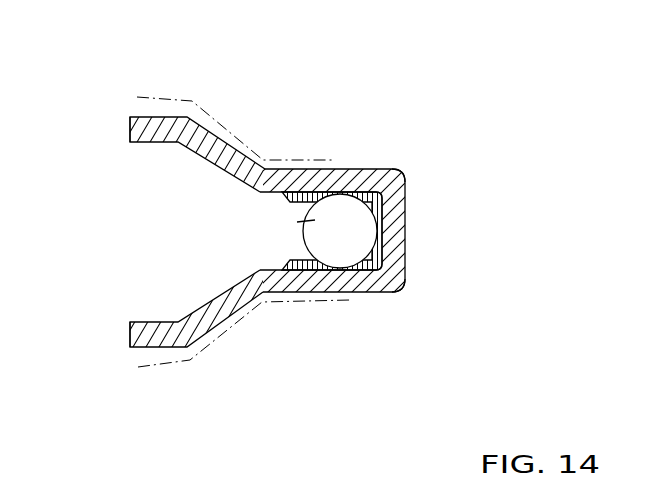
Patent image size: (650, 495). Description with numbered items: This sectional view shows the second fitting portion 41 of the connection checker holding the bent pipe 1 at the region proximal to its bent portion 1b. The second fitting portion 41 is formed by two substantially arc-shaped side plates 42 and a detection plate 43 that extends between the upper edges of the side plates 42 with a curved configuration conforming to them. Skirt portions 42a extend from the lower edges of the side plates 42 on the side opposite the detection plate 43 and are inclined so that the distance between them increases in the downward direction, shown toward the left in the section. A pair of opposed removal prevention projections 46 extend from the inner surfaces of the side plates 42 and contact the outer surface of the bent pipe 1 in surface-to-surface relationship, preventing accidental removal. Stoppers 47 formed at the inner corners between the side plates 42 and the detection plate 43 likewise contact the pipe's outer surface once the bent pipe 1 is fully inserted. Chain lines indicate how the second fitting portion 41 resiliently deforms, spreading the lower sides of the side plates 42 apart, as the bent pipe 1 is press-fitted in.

The bent pipe 1 is at (315, 221).
The bent portion 1b is at (306, 238).
The second fitting portion 41 is at (321, 169).
The side plates 42 is at (200, 110).
The skirt portions 42a is at (200, 155).
The detection plate 43 is at (395, 228).
The removal prevention projections 46 is at (300, 198).
The stoppers 47 is at (390, 183).